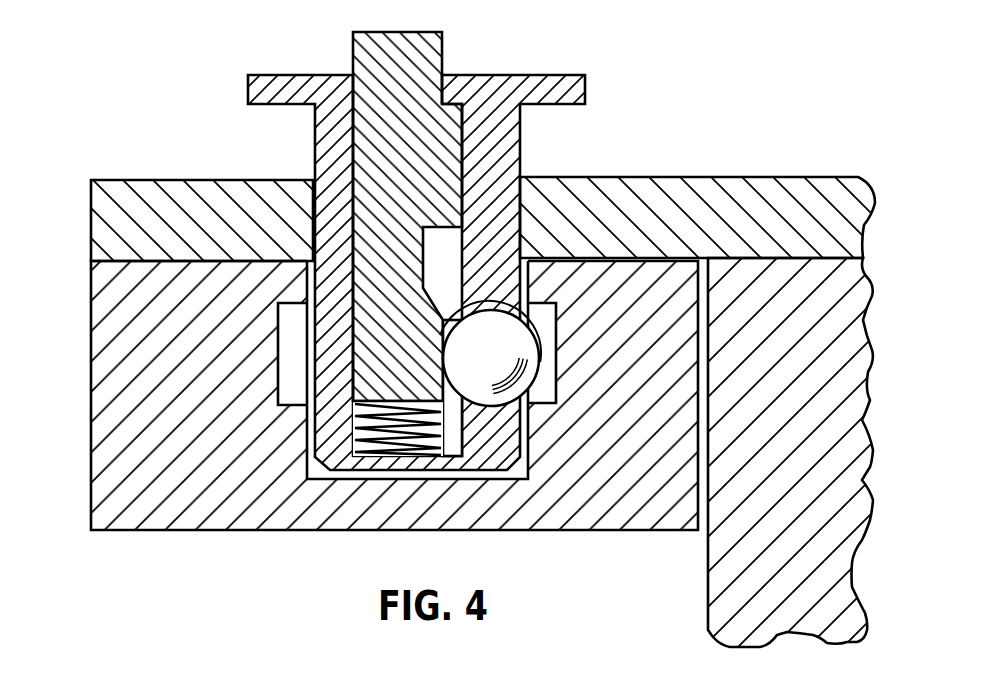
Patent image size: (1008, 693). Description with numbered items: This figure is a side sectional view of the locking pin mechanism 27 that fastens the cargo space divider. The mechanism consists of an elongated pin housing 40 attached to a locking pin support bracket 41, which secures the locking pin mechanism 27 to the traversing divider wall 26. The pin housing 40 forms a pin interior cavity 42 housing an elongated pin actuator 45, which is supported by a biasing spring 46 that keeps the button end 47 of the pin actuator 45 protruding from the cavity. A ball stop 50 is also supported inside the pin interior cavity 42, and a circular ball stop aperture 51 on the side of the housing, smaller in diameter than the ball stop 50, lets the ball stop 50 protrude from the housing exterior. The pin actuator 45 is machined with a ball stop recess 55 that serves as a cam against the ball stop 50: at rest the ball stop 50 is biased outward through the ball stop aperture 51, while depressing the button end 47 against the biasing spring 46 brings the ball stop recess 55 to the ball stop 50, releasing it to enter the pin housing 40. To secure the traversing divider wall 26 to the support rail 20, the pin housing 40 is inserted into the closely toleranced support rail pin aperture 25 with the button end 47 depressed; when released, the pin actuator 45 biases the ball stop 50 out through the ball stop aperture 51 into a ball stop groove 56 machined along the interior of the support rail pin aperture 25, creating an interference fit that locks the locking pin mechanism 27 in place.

The support rail 20 is at (102, 402).
The support rail pin aperture 25 is at (307, 484).
The traversing divider wall 26 is at (850, 332).
The locking pin mechanism 27 is at (211, 38).
The pin housing 40 is at (528, 75).
The locking pin support bracket 41 is at (194, 180).
The pin interior cavity 42 is at (457, 423).
The pin actuator 45 is at (420, 170).
The biasing spring 46 is at (393, 445).
The button end 47 is at (410, 32).
The ball stop 50 is at (490, 353).
The ball stop aperture 51 is at (490, 408).
The ball stop recess 55 is at (522, 177).
The ball stop groove 56 is at (295, 367).